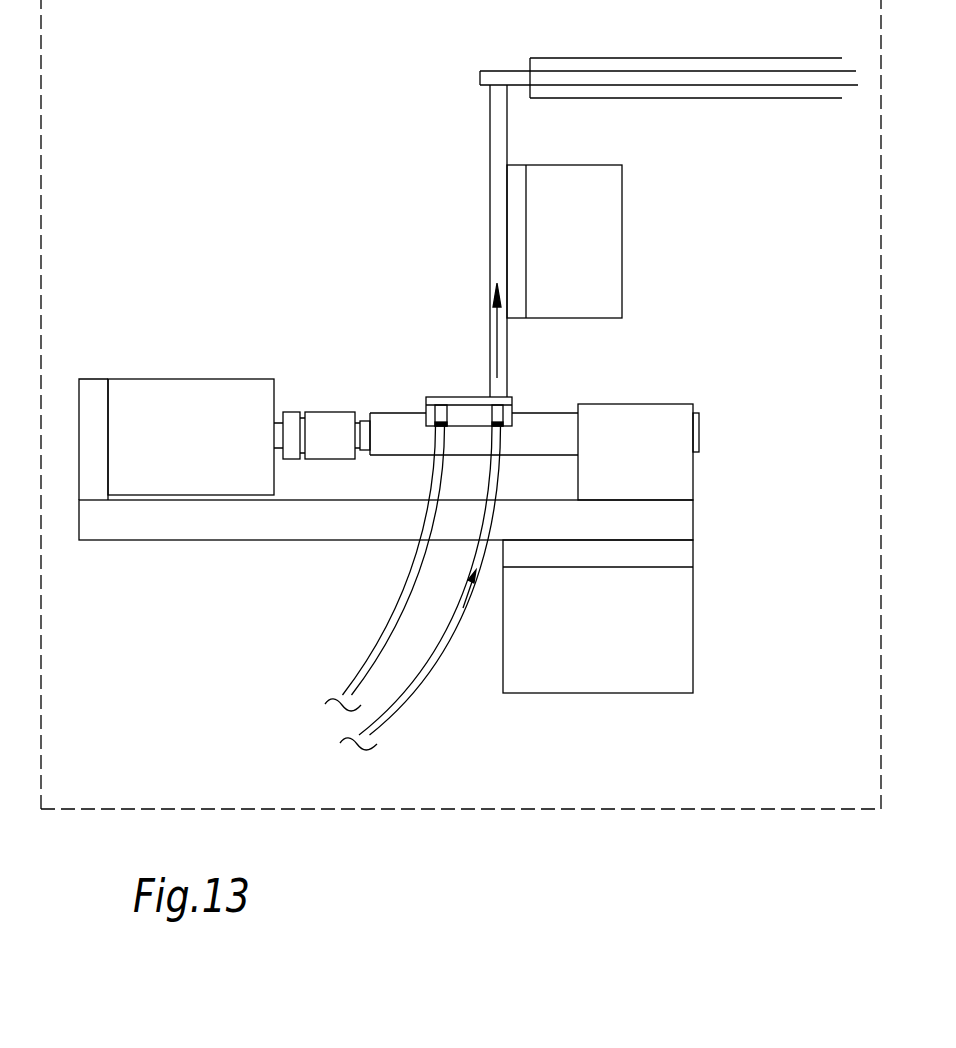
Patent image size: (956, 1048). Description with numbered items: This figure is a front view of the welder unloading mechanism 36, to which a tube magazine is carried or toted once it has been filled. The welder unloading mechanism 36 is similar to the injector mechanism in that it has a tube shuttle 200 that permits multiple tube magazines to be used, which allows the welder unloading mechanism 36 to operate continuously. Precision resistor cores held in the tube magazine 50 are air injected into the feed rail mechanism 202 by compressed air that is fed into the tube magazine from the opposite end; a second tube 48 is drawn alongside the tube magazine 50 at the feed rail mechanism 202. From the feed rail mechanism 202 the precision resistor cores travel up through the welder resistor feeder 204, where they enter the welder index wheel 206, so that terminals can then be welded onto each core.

The welder unloading mechanism 36 is at (285, 182).
The sealant supply tube 48 is at (367, 664).
The tube magazine 50 is at (398, 700).
The tube shuttle 200 is at (385, 420).
The feed rail mechanism 202 is at (458, 395).
The welder resistor feeder 204 is at (492, 202).
The welder index wheel 206 is at (565, 62).